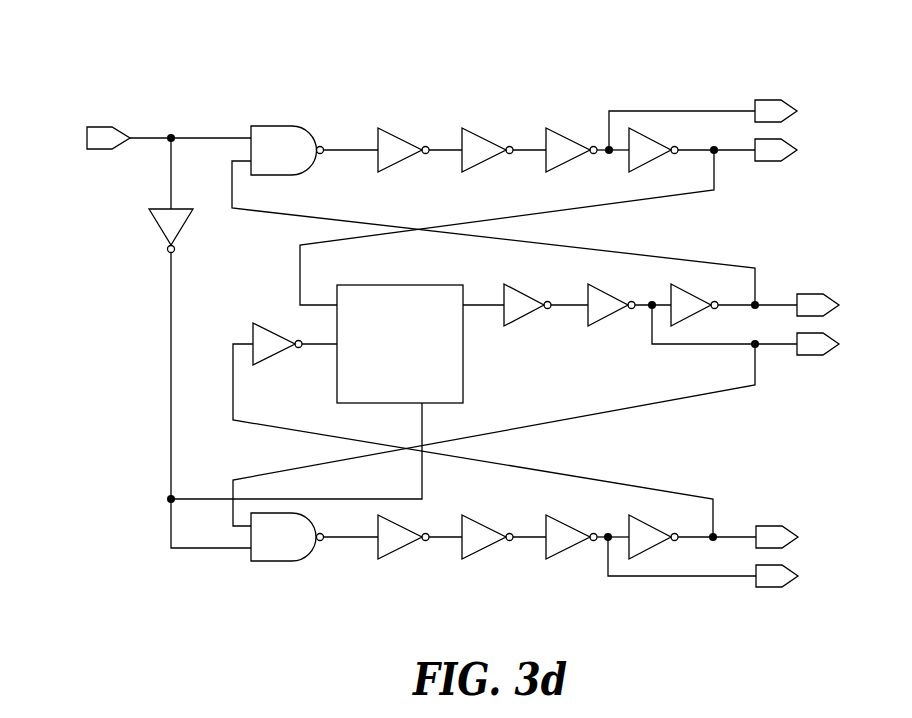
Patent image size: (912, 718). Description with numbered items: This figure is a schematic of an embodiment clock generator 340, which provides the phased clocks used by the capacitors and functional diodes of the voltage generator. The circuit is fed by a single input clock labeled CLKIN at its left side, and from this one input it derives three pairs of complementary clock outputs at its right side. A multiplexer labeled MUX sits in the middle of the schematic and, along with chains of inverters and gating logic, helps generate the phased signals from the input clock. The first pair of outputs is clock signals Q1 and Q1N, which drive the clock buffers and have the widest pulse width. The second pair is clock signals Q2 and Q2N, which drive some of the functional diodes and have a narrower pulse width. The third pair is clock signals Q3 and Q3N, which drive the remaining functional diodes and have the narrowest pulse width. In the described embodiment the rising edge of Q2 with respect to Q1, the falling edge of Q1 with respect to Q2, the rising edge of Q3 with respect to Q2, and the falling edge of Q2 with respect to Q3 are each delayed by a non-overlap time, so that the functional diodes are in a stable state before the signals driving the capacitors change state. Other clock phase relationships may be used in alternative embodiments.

The clock generator 340 is at (139, 46).
The clock input port CLKIN is at (74, 138).
The multiplexer MUX is at (400, 335).
The clock signal Q1N is at (801, 111).
The clock signal Q1 is at (792, 150).
The clock signal Q2N is at (844, 305).
The clock signal Q2 is at (839, 344).
The clock signal Q3N is at (802, 537).
The clock signal Q3 is at (799, 576).